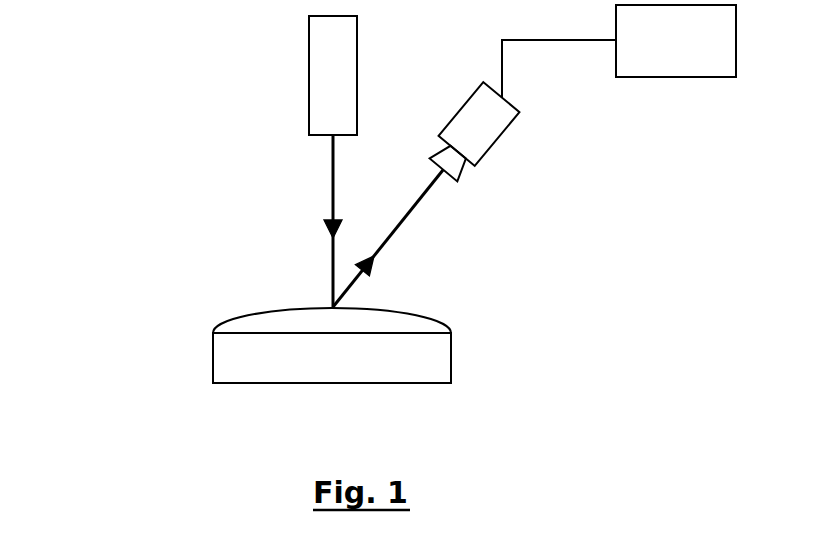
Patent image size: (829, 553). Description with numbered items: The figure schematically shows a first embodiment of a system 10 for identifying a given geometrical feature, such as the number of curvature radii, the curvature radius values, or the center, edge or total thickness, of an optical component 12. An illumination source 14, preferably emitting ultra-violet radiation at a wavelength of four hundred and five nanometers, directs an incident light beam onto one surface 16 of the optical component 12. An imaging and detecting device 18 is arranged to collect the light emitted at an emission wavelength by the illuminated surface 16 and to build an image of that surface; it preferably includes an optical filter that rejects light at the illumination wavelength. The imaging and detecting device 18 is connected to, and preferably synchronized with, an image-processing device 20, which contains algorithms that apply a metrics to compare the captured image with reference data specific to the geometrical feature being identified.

The system for identification of a given geometrical feature of an optical component 10 is at (133, 157).
The optical component 12 is at (477, 370).
The illumination source 14 is at (318, 85).
The surface of the optical component 16 is at (430, 320).
The imaging and detecting device 18 is at (492, 123).
The image-processing device 20 is at (619, 51).